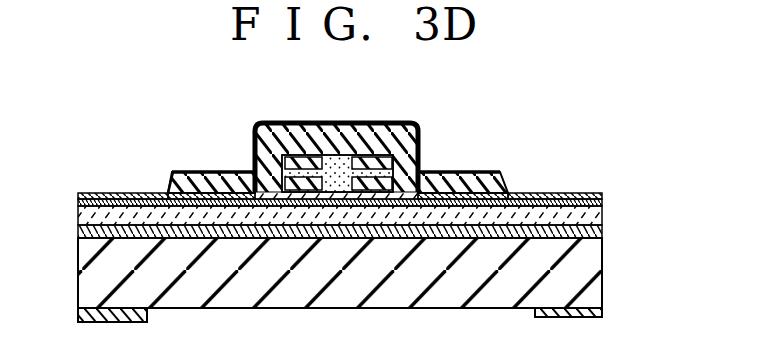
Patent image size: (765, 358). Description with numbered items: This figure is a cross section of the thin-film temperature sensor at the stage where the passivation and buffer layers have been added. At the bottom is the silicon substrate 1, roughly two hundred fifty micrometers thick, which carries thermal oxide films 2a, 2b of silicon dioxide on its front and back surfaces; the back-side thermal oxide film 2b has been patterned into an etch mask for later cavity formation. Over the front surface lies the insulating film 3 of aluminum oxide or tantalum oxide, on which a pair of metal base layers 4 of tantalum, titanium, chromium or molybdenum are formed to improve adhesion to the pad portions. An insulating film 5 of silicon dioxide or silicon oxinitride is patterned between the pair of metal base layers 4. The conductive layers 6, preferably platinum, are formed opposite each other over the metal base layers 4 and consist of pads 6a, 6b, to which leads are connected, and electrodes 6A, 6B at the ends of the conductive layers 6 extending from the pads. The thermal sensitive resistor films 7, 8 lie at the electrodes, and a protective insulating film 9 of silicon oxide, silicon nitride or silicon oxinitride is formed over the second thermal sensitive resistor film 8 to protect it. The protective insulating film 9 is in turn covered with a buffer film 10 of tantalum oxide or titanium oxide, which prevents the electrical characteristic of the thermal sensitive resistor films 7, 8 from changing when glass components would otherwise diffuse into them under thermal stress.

The substrate 1 is at (592, 283).
The thermal oxide film 2a is at (602, 231).
The thermal oxide film 2b is at (597, 318).
The insulating film 3 is at (600, 212).
The metal base layers 4 is at (588, 199).
The insulating film 5 is at (447, 172).
The conductive layers 6 is at (243, 172).
The pad 6a is at (103, 196).
The pad 6b is at (560, 193).
The electrode 6A is at (305, 155).
The electrode 6B is at (427, 150).
The thermal sensitive resistor film 7 is at (355, 175).
The second thermal sensitive resistor film 8 is at (323, 123).
The protective insulating film 9 is at (168, 188).
The buffer film 10 is at (200, 172).